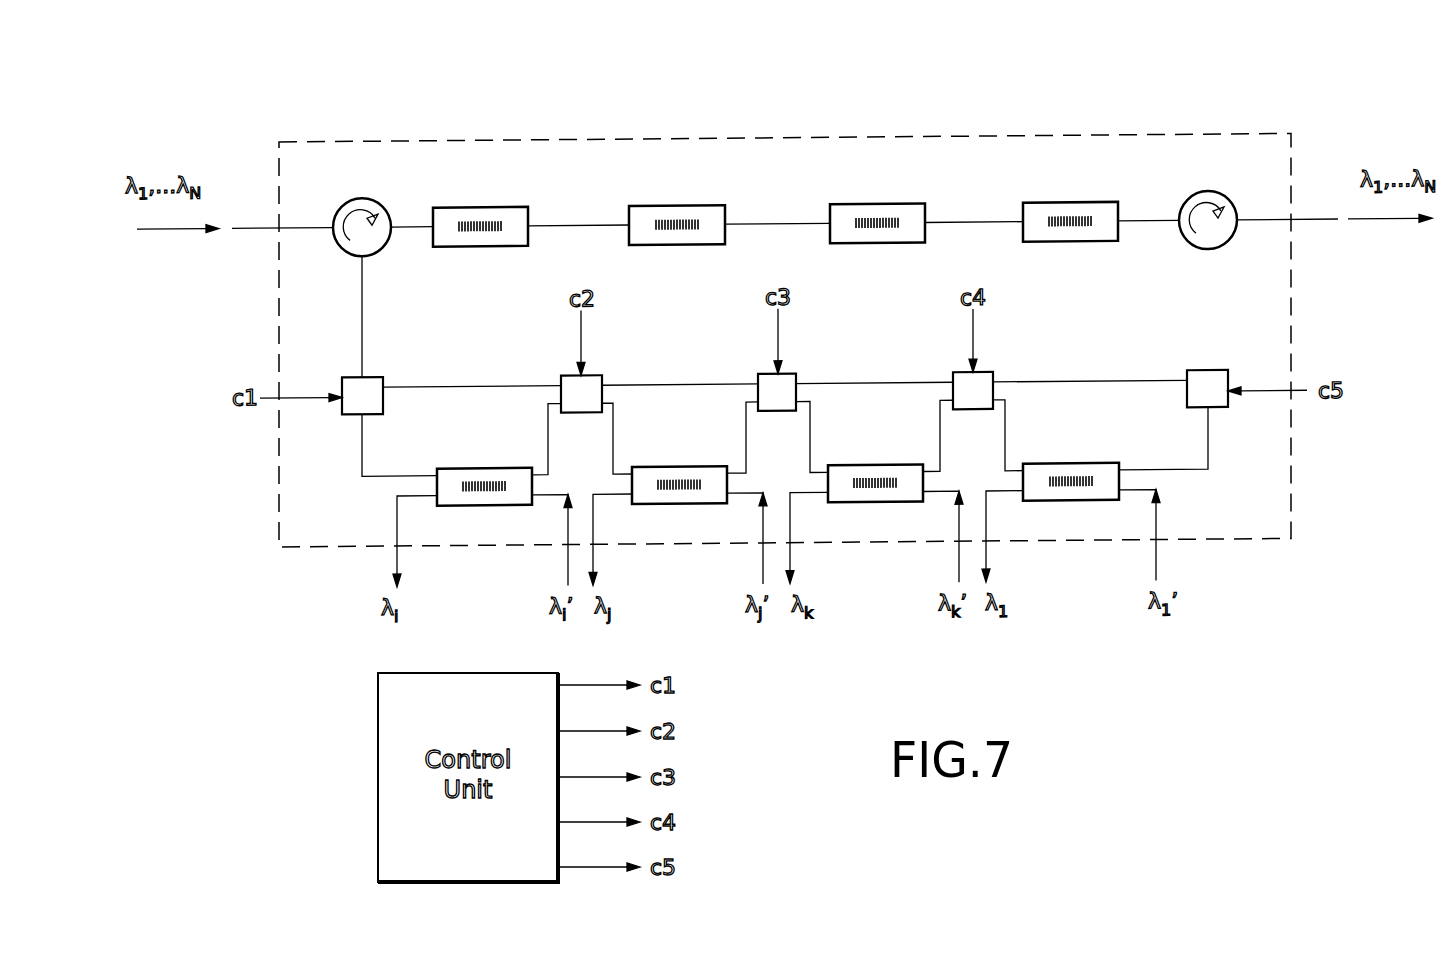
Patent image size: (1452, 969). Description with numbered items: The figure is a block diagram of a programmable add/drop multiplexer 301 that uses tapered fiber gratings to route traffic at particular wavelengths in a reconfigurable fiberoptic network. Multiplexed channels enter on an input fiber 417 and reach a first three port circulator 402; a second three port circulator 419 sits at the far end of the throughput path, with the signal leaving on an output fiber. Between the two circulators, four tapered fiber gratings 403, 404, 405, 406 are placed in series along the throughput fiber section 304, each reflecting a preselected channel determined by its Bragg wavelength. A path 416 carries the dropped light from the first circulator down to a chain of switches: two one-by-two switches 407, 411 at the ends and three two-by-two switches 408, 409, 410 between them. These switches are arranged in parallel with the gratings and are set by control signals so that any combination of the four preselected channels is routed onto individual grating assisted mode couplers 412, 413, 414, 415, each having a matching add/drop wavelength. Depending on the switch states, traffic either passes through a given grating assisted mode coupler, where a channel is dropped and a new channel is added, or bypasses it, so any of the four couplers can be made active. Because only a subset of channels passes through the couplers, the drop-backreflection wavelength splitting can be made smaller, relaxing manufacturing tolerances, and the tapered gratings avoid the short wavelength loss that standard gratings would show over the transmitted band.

The optical add/drop module 301 is at (553, 134).
The optical fibre path 304 is at (798, 226).
The output circulator 402 is at (1208, 199).
The tapered fiber grating 403 is at (460, 248).
The tapered fiber grating 404 is at (655, 248).
The tapered fiber grating 405 is at (852, 248).
The tapered fiber grating 406 is at (1048, 248).
The 1:2 switch 407 is at (383, 378).
The 2:2 switch 408 is at (602, 378).
The 2:2 switch 409 is at (796, 378).
The 2:2 switch 410 is at (993, 378).
The 1:2 switch 411 is at (1228, 378).
The grating assisted mode coupler 412 is at (462, 470).
The grating assisted mode coupler 413 is at (660, 470).
The grating assisted mode coupler 414 is at (856, 470).
The grating assisted mode coupler 415 is at (1053, 470).
The circulator drop path 416 is at (362, 326).
The input fibre 417 is at (300, 228).
The three port circulator 419 is at (1308, 228).